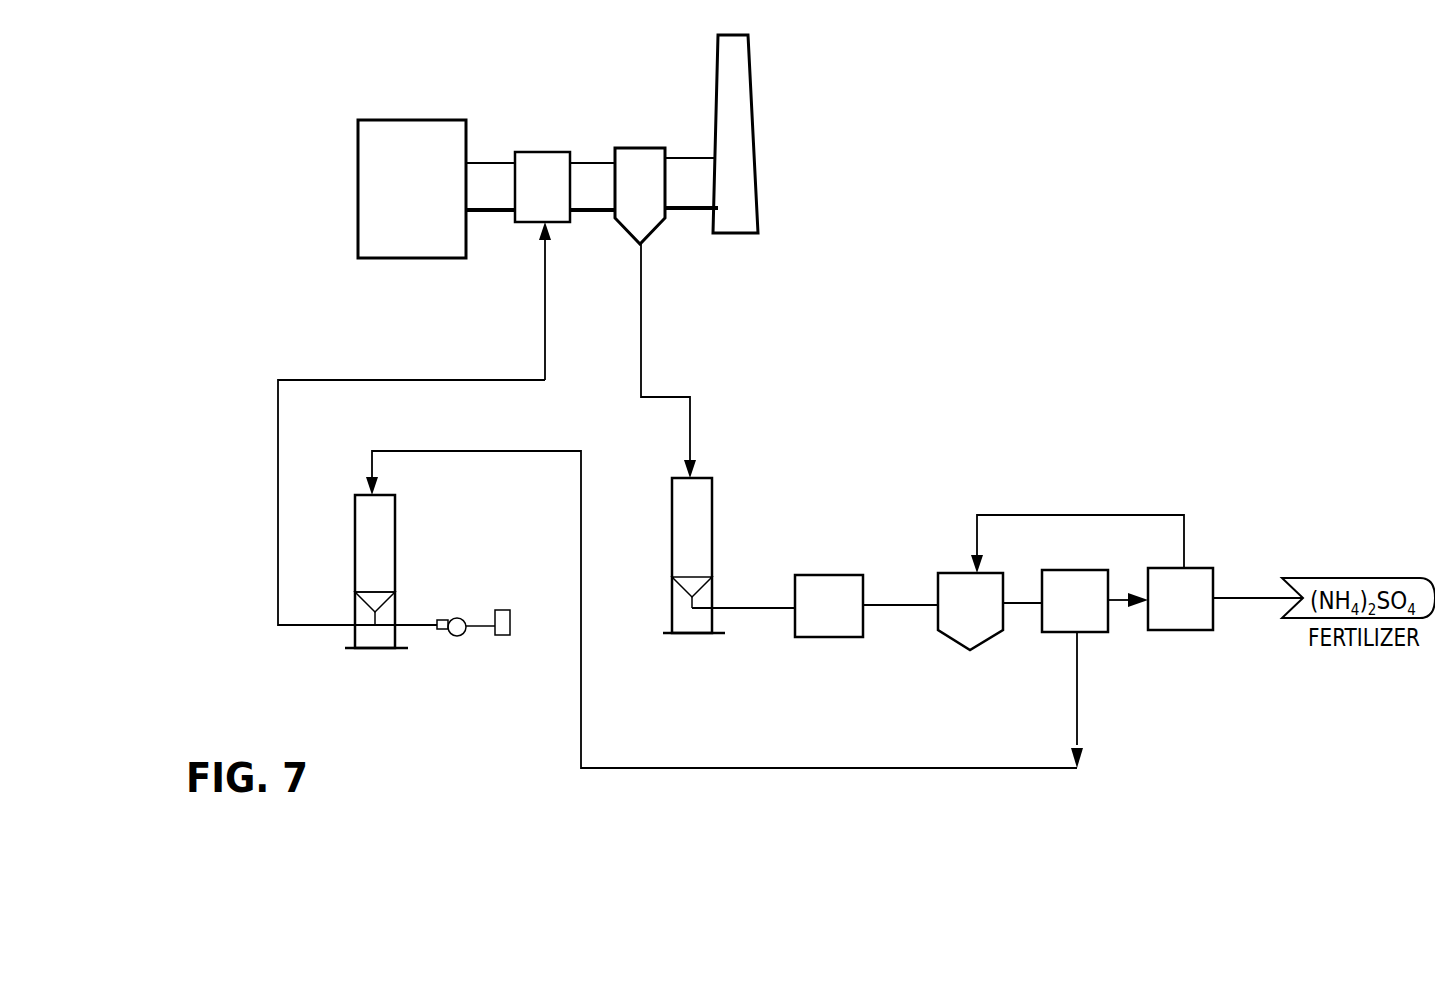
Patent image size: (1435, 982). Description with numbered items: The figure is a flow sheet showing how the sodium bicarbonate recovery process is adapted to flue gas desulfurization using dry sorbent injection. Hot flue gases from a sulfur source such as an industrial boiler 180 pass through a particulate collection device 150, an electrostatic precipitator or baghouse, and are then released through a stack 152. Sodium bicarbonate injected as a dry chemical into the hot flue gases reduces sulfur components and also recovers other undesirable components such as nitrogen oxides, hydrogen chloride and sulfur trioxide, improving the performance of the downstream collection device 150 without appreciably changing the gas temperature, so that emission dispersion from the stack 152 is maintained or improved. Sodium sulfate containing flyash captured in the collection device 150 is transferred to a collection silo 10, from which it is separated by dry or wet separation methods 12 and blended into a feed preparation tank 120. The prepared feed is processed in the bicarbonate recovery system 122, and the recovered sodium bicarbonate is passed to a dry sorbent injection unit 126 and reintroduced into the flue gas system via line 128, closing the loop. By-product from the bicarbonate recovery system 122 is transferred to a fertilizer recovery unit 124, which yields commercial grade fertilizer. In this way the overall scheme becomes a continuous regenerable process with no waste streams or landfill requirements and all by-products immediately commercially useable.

The industrial boiler 180 is at (396, 128).
The particulate collection device 150 is at (640, 152).
The stack 152 is at (755, 144).
The line 128 is at (278, 503).
The dry sorbent injection unit 126 is at (365, 530).
The collection silo 10 is at (672, 540).
The separation methods 12 is at (790, 623).
The feed preparation tank 120 is at (950, 618).
The bicarbonate recovery system 122 is at (1035, 618).
The fertilizer recovery unit 124 is at (1145, 615).